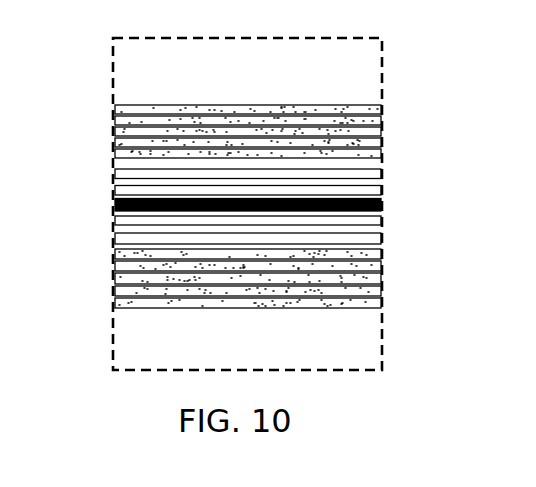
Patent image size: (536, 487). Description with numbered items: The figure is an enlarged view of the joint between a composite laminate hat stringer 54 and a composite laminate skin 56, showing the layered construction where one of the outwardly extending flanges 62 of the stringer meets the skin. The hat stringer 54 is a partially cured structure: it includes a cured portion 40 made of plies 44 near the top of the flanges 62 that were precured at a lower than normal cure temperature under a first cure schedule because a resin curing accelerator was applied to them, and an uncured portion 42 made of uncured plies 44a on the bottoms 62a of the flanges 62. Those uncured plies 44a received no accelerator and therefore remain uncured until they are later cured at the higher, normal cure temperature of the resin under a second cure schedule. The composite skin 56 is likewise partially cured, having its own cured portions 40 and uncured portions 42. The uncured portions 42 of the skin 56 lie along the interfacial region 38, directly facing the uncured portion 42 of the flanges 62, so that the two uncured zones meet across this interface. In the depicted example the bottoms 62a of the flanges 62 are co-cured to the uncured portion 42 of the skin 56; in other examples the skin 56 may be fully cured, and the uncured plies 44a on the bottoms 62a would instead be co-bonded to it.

The composite laminate hat stringer 54 is at (298, 88).
The cured portion 40 is at (390, 105).
The uncured portion 42 is at (106, 164).
The interfacial region 38 is at (392, 206).
The uncured plies 44a is at (383, 183).
The plies 44 is at (220, 177).
The flanges 62 is at (115, 118).
The composite laminate skin 56 is at (113, 278).
The bottoms of the flanges 62a is at (186, 222).